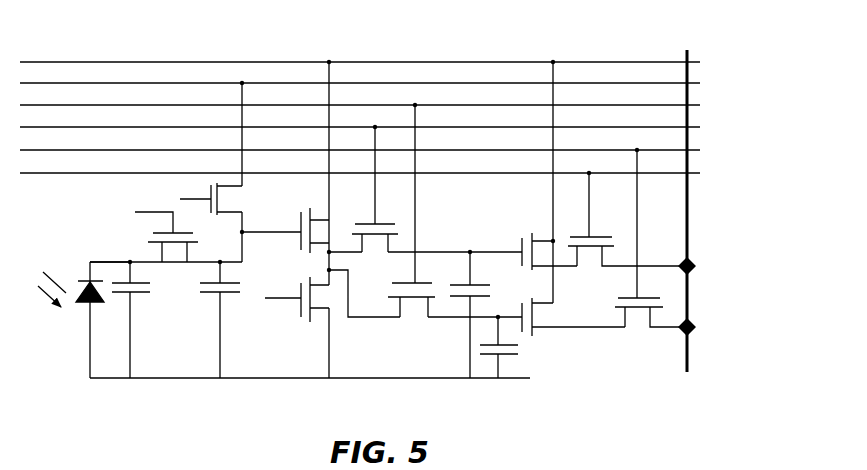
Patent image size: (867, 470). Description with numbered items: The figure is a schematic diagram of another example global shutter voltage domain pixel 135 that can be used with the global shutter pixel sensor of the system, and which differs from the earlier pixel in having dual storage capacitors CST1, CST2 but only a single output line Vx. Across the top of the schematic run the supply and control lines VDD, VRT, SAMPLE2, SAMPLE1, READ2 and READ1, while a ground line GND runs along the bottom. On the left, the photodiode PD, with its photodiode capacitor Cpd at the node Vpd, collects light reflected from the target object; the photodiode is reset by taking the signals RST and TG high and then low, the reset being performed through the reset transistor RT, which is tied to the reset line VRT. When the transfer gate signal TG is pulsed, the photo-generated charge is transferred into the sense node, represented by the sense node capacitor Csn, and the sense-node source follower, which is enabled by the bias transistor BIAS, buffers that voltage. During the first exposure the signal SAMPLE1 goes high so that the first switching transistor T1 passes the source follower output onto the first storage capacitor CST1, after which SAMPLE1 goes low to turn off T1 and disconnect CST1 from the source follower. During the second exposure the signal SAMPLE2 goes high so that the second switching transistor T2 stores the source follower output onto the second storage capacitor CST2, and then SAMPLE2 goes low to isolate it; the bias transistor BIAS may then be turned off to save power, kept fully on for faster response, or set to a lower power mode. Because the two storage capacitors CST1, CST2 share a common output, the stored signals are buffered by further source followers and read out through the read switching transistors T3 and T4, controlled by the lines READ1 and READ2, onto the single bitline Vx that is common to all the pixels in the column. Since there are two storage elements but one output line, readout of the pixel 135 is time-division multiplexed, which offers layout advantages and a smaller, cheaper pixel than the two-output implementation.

The global shutter voltage domain pixel 135 is at (723, 39).
The VDD supply line VDD is at (360, 53).
The VRT reset voltage line VRT is at (360, 74).
The SAMPLE2 signal SAMPLE2 is at (360, 97).
The SAMPLE1 signal SAMPLE1 is at (360, 118).
The READ2 signal line READ2 is at (360, 141).
The READ1 signal line READ1 is at (360, 164).
The output line Vx is at (696, 211).
The RST signal RST is at (208, 196).
The TG signal TG is at (155, 232).
The reset transistor RT is at (166, 242).
The photodiode PD is at (71, 320).
The photodiode voltage node Vpd is at (92, 253).
The photodiode capacitor Cpd is at (139, 320).
The sense node capacitor Csn is at (224, 320).
The ground line GND is at (310, 391).
The bias transistor BIAS is at (293, 298).
The first sample switching transistor T1 is at (425, 227).
The second sample switching transistor T2 is at (425, 293).
The first storage capacitor CST1 is at (477, 315).
The second storage capacitor CST2 is at (517, 347).
The first read switching transistor T3 is at (627, 238).
The second read switching transistor T4 is at (651, 300).